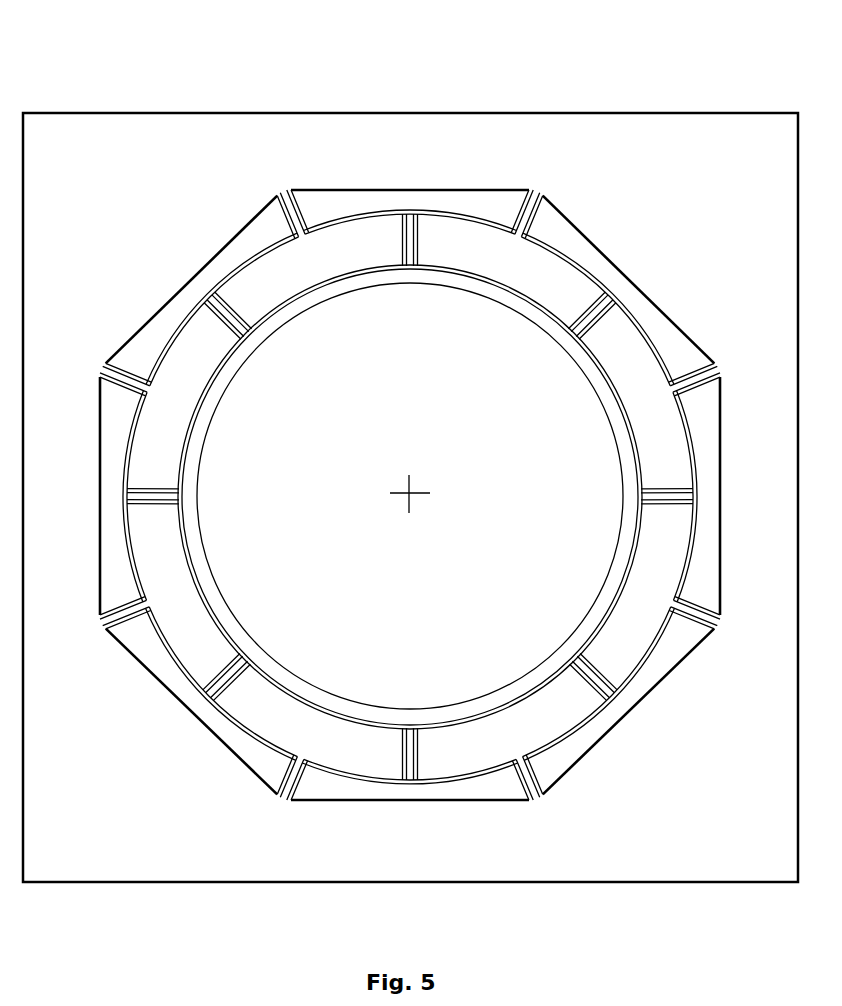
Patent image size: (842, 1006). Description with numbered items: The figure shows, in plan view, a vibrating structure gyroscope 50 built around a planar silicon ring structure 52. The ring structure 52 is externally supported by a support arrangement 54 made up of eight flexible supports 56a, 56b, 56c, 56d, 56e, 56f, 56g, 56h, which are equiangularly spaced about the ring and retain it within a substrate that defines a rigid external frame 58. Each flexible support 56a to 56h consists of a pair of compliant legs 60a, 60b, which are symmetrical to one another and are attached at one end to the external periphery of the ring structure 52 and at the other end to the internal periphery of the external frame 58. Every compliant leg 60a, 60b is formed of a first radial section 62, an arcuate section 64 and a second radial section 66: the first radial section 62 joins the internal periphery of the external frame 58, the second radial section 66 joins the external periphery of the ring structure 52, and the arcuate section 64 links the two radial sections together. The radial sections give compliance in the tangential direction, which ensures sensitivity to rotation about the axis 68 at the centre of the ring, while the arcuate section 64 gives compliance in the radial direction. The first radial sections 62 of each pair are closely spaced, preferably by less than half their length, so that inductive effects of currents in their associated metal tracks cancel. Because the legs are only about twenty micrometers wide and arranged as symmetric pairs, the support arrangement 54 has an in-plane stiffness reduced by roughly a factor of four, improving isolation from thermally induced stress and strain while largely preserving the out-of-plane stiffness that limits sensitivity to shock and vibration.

The vibrating structure gyroscope 50 is at (410, 490).
The planar silicon ring structure 52 is at (543, 327).
The support arrangement 54 is at (152, 546).
The flexible support 56a is at (543, 208).
The flexible support 56b is at (700, 403).
The flexible support 56c is at (693, 607).
The flexible support 56d is at (527, 803).
The flexible support 56e is at (303, 778).
The flexible support 56f is at (120, 640).
The flexible support 56g is at (108, 365).
The flexible support 56h is at (280, 196).
The external frame 58 is at (659, 860).
The compliant leg 60a is at (296, 801).
The compliant leg 60b is at (269, 793).
The first radial section 62 is at (697, 638).
The arcuate section 64 is at (655, 650).
The second radial section 66 is at (640, 688).
The axis 68 is at (407, 492).